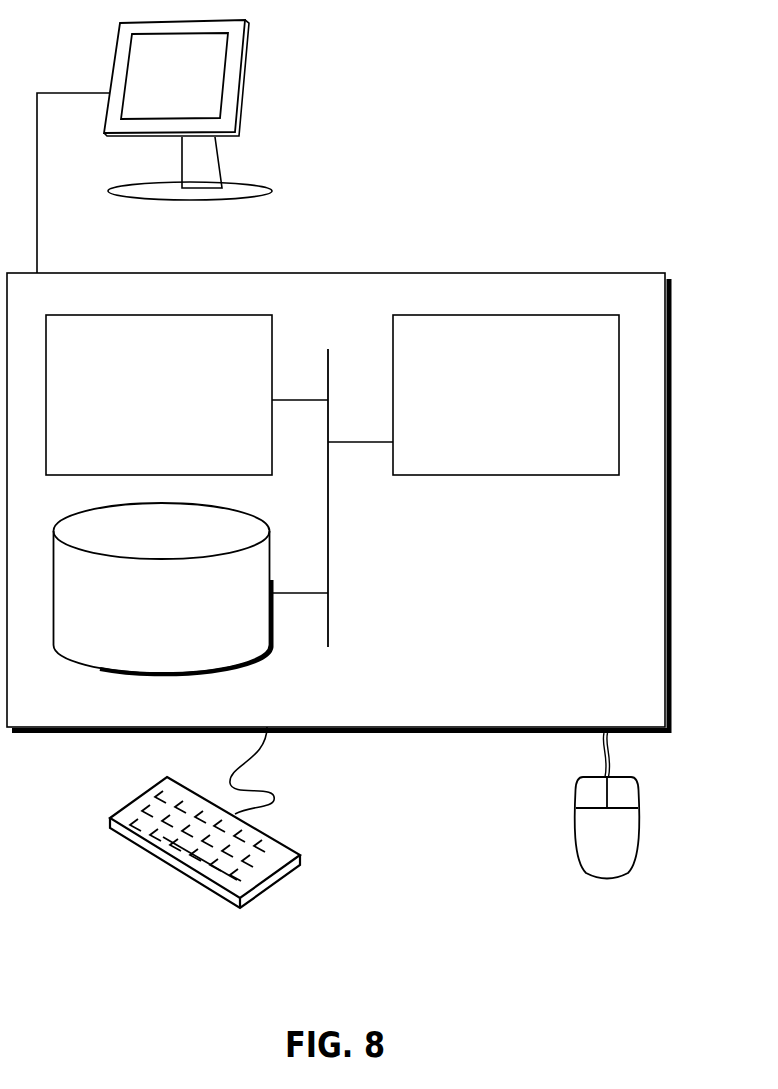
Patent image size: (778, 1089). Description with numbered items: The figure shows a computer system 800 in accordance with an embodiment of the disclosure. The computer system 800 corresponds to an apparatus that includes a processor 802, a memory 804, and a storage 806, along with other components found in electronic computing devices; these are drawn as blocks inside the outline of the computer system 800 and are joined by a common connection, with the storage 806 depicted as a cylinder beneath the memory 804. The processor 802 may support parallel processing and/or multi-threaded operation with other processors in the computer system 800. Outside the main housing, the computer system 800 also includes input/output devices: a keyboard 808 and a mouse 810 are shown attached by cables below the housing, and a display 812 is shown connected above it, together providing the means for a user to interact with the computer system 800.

The computer system 800 is at (382, 252).
The processor 802 is at (485, 409).
The memory 804 is at (138, 409).
The storage 806 is at (144, 619).
The keyboard 808 is at (125, 842).
The mouse 810 is at (588, 850).
The display 812 is at (154, 146).